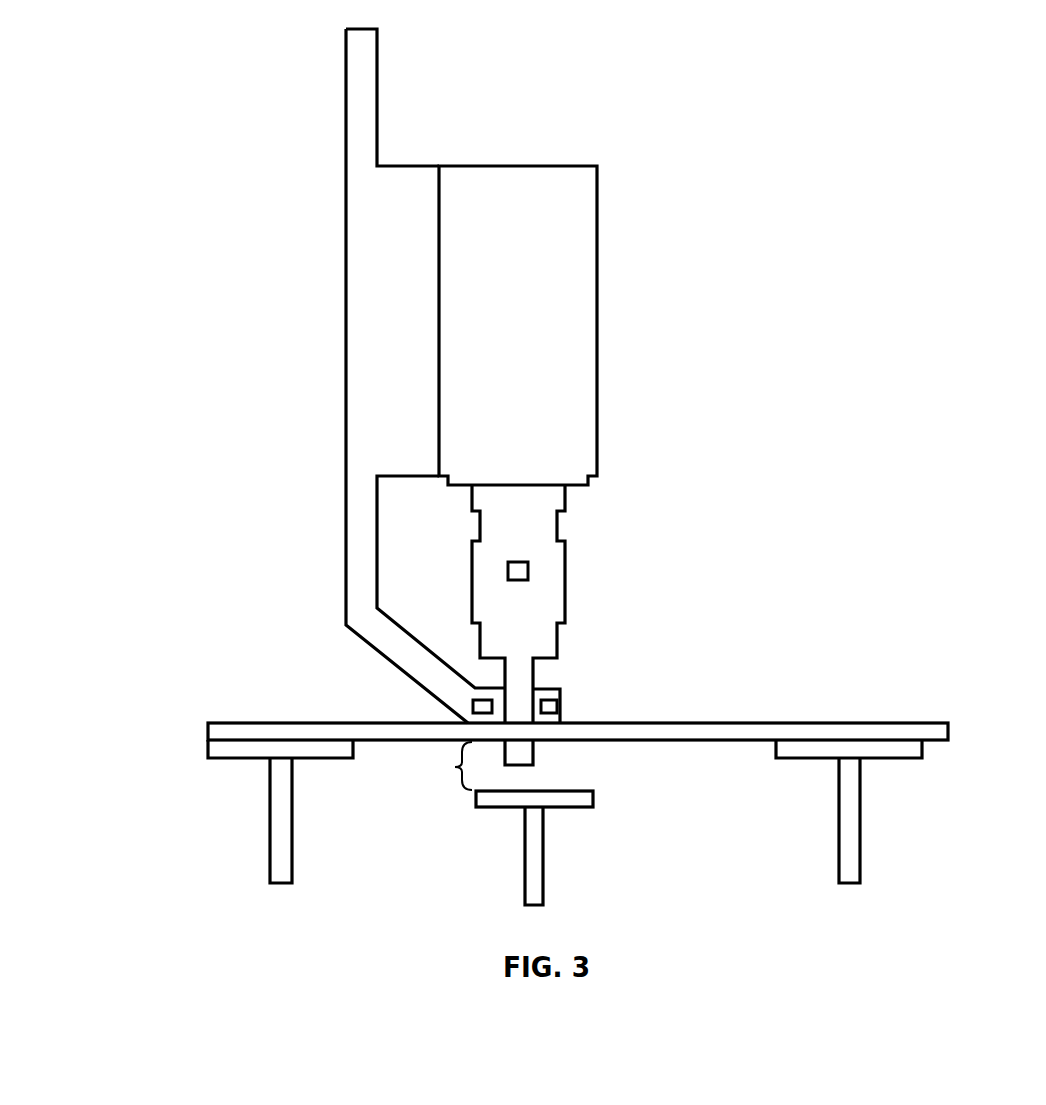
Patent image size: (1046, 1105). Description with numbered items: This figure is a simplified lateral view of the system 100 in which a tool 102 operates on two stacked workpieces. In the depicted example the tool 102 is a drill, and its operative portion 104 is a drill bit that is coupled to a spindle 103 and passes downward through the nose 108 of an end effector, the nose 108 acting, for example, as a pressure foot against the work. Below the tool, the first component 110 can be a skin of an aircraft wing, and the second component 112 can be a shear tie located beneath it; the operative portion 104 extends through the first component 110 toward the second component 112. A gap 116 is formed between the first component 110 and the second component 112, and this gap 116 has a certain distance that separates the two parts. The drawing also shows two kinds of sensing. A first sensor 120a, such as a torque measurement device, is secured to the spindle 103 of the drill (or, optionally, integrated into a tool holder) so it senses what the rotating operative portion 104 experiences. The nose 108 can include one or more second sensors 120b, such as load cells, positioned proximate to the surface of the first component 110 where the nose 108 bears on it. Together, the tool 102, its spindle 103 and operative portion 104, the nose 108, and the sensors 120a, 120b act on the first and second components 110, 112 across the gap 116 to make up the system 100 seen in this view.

The system 100 is at (152, 78).
The tool 102 is at (607, 298).
The spindle 103 is at (558, 527).
The operative portion 104 is at (334, 222).
The nose 108 is at (543, 688).
The first component 110 is at (673, 722).
The second component 112 is at (585, 807).
The gap 116 is at (435, 766).
The first sensor 120a is at (528, 571).
The second sensor 120b is at (472, 710).